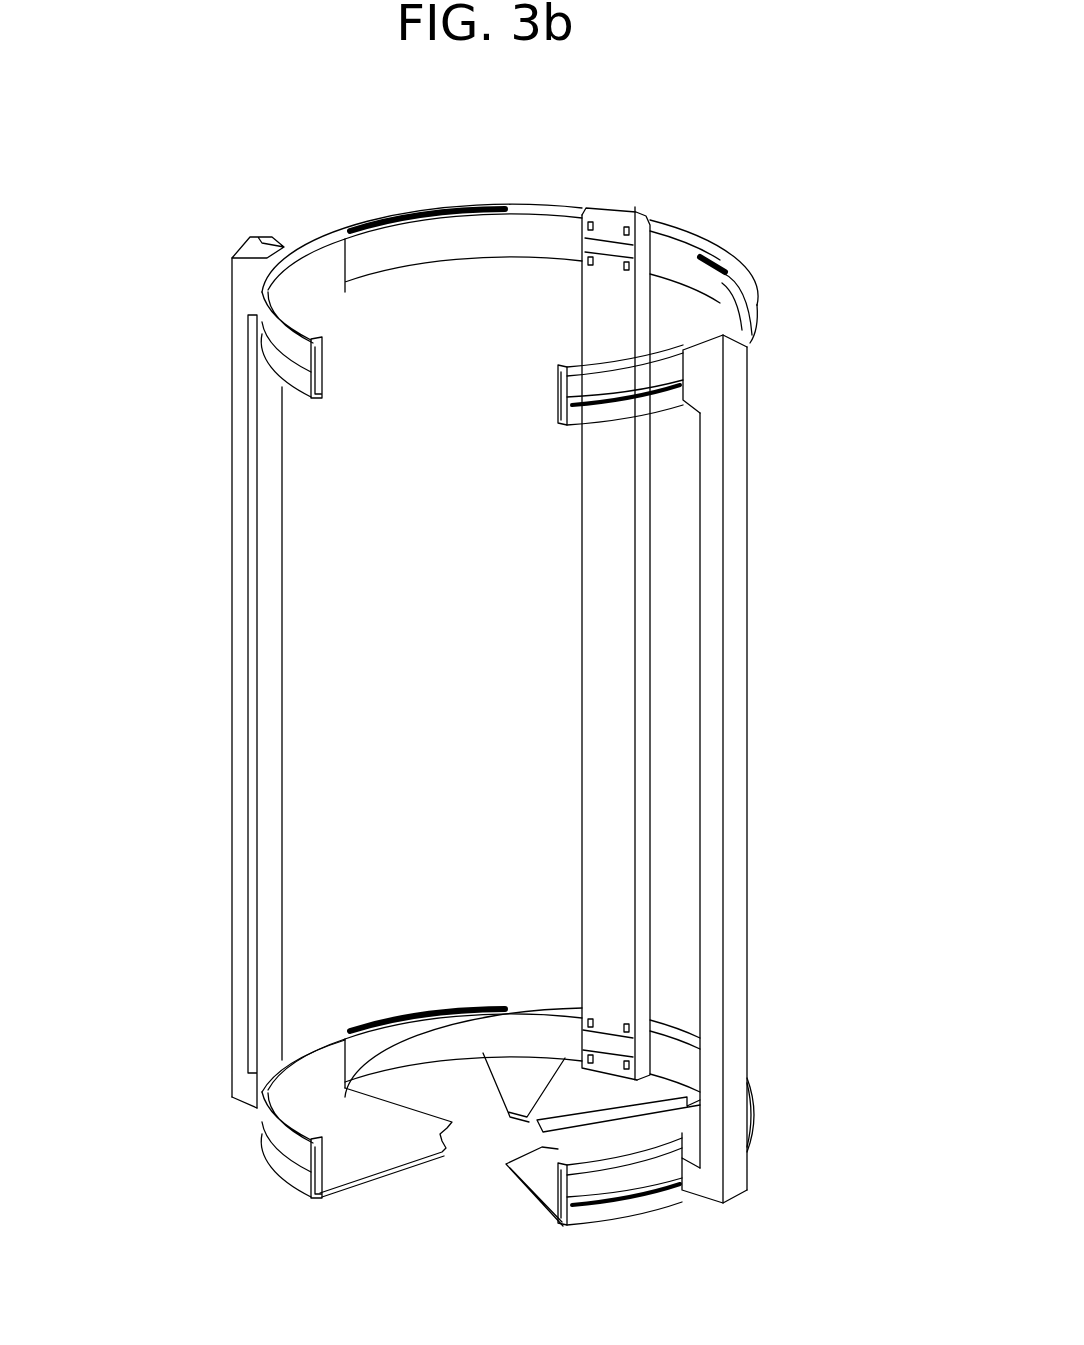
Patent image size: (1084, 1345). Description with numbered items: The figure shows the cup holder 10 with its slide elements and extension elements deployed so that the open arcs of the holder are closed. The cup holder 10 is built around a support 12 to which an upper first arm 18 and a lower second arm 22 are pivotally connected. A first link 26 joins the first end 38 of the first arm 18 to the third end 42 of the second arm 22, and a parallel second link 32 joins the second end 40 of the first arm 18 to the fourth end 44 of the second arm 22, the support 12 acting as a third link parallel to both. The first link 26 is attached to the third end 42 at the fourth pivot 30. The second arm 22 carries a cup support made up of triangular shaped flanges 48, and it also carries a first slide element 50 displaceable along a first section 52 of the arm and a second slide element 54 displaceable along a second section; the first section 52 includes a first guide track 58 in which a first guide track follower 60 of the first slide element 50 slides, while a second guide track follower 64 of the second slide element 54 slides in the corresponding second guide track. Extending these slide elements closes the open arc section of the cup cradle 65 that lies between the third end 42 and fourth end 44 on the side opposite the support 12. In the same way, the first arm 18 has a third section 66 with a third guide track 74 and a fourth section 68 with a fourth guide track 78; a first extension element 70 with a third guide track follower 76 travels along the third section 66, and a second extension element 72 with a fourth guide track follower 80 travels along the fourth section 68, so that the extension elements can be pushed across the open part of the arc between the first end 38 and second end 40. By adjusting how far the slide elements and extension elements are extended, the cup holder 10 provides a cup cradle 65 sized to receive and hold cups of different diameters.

The cup holder 10 is at (762, 185).
The support 12 is at (590, 718).
The first arm 18 is at (657, 234).
The second arm 22 is at (525, 1000).
The first link 26 is at (243, 760).
The fourth pivot 30 is at (232, 1112).
The second link 32 is at (738, 780).
The first end 38 is at (285, 238).
The second end 40 is at (733, 330).
The third end 42 is at (298, 1035).
The fourth end 44 is at (755, 1115).
The triangular shaped flanges 48 is at (527, 1177).
The first slide element 50 is at (320, 1075).
The first section 52 is at (428, 1010).
The second slide element 54 is at (640, 1140).
The first guide track 58 is at (385, 1015).
The first guide track follower 60 is at (295, 1177).
The second guide track follower 64 is at (605, 1215).
The cup cradle 65 is at (180, 980).
The third section 66 is at (352, 230).
The fourth section 68 is at (740, 320).
The first extension element 70 is at (313, 268).
The second extension element 72 is at (586, 283).
The third guide track 74 is at (400, 222).
The third guide track follower 76 is at (280, 376).
The fourth guide track 78 is at (702, 275).
The fourth guide track follower 80 is at (580, 420).